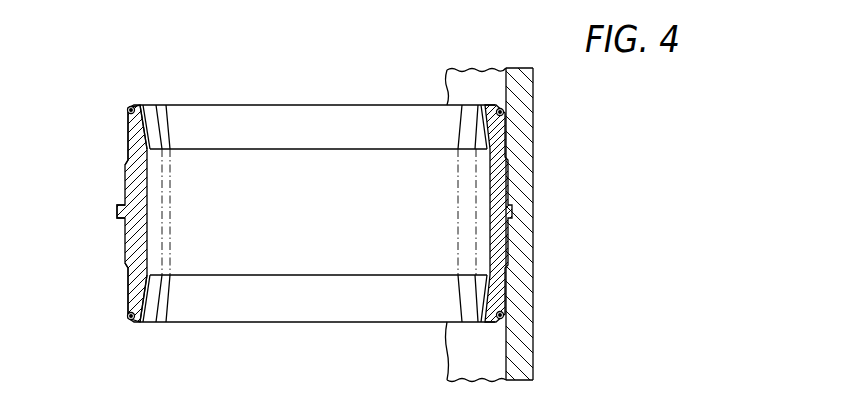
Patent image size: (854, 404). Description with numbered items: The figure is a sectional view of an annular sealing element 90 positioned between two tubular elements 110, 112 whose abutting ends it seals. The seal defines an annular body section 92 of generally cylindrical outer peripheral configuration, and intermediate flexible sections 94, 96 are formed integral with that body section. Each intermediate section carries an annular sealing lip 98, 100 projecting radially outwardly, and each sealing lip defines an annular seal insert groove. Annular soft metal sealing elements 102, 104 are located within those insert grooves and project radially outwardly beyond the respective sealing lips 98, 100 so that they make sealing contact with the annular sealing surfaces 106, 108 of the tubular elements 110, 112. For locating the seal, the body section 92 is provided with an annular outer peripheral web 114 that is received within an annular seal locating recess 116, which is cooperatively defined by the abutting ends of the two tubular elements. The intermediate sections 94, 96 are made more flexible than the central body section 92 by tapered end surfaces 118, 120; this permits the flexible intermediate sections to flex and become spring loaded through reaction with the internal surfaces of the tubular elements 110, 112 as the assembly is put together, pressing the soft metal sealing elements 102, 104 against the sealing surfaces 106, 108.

The annular sealing element 90 is at (148, 71).
The annular body section 92 is at (125, 183).
The intermediate flexible section 94 is at (142, 147).
The intermediate flexible section 96 is at (135, 293).
The annular sealing lip 98 is at (137, 103).
The annular sealing lip 100 is at (137, 323).
The annular soft metal sealing element 102 is at (127, 110).
The annular soft metal sealing element 104 is at (128, 315).
The annular sealing surface 106 is at (500, 110).
The annular sealing surface 108 is at (505, 368).
The tubular element 110 is at (527, 133).
The tubular element 112 is at (525, 314).
The annular outer peripheral web 114 is at (118, 212).
The annular seal locating recess 116 is at (495, 214).
The tapered end surface 118 is at (275, 115).
The tapered end surface 120 is at (283, 312).